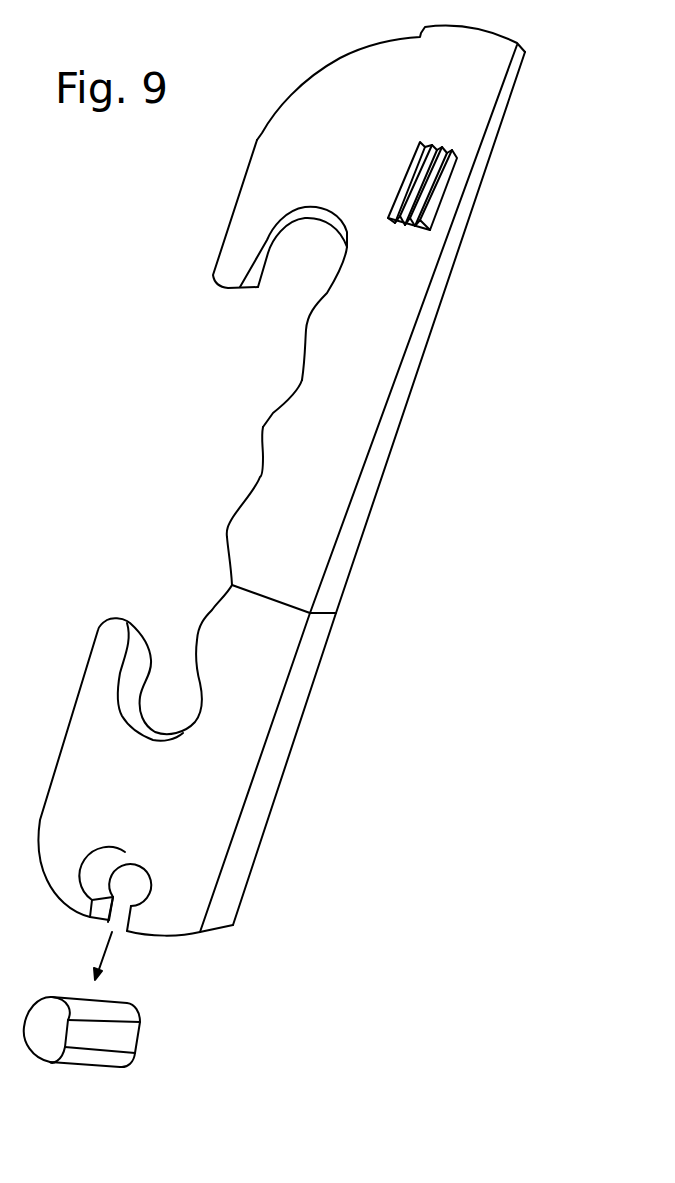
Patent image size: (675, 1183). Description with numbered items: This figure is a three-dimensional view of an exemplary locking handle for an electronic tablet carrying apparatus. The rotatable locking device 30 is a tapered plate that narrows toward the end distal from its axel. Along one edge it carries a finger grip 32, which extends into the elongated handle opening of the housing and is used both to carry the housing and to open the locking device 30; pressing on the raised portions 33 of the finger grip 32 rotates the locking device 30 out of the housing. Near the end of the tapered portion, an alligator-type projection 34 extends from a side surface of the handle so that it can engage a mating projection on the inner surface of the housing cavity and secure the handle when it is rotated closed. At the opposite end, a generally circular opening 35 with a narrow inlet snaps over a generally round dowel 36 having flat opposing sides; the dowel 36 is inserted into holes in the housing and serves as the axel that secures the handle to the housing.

The locking device 30 is at (407, 405).
The finger grip 32 is at (260, 477).
The raised portions 33 is at (263, 427).
The alligator-type projection 34 is at (442, 205).
The generally circular opening 35 is at (147, 860).
The dowel 36 is at (138, 1042).